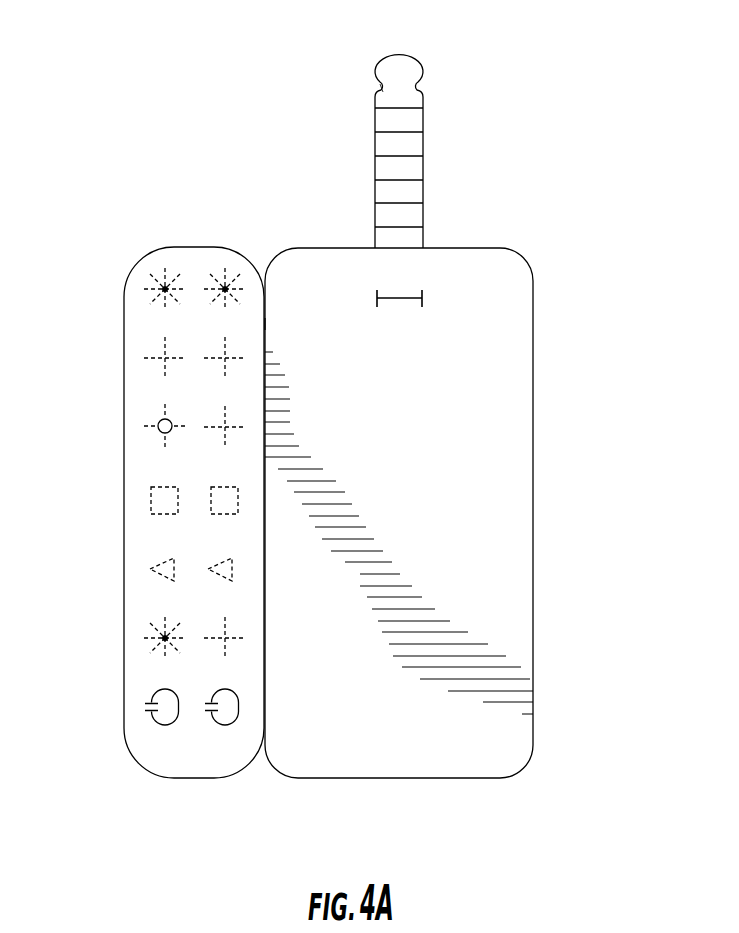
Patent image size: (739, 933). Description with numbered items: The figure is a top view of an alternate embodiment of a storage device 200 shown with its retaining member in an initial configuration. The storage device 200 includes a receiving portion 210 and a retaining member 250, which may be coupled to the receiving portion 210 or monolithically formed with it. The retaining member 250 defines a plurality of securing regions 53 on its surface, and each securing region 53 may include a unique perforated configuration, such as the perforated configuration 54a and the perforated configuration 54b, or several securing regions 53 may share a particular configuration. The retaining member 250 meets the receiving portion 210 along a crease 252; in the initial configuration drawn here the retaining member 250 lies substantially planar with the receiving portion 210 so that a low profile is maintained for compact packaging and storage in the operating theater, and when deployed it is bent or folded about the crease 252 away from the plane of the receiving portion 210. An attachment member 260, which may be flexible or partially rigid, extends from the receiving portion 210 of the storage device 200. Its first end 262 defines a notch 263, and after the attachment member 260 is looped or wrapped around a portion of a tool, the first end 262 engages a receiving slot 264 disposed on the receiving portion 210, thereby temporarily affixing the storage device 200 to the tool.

The storage device 200 is at (604, 196).
The receiving portion 210 is at (503, 749).
The retaining member 250 is at (196, 258).
The crease 252 is at (265, 318).
The attachment member 260 is at (428, 88).
The first end 262 is at (393, 55).
The notch 263 is at (380, 88).
The receiving slot 264 is at (422, 293).
The securing region 53 is at (143, 412).
The perforated configuration 54a is at (158, 355).
The perforated configuration 54b is at (161, 284).